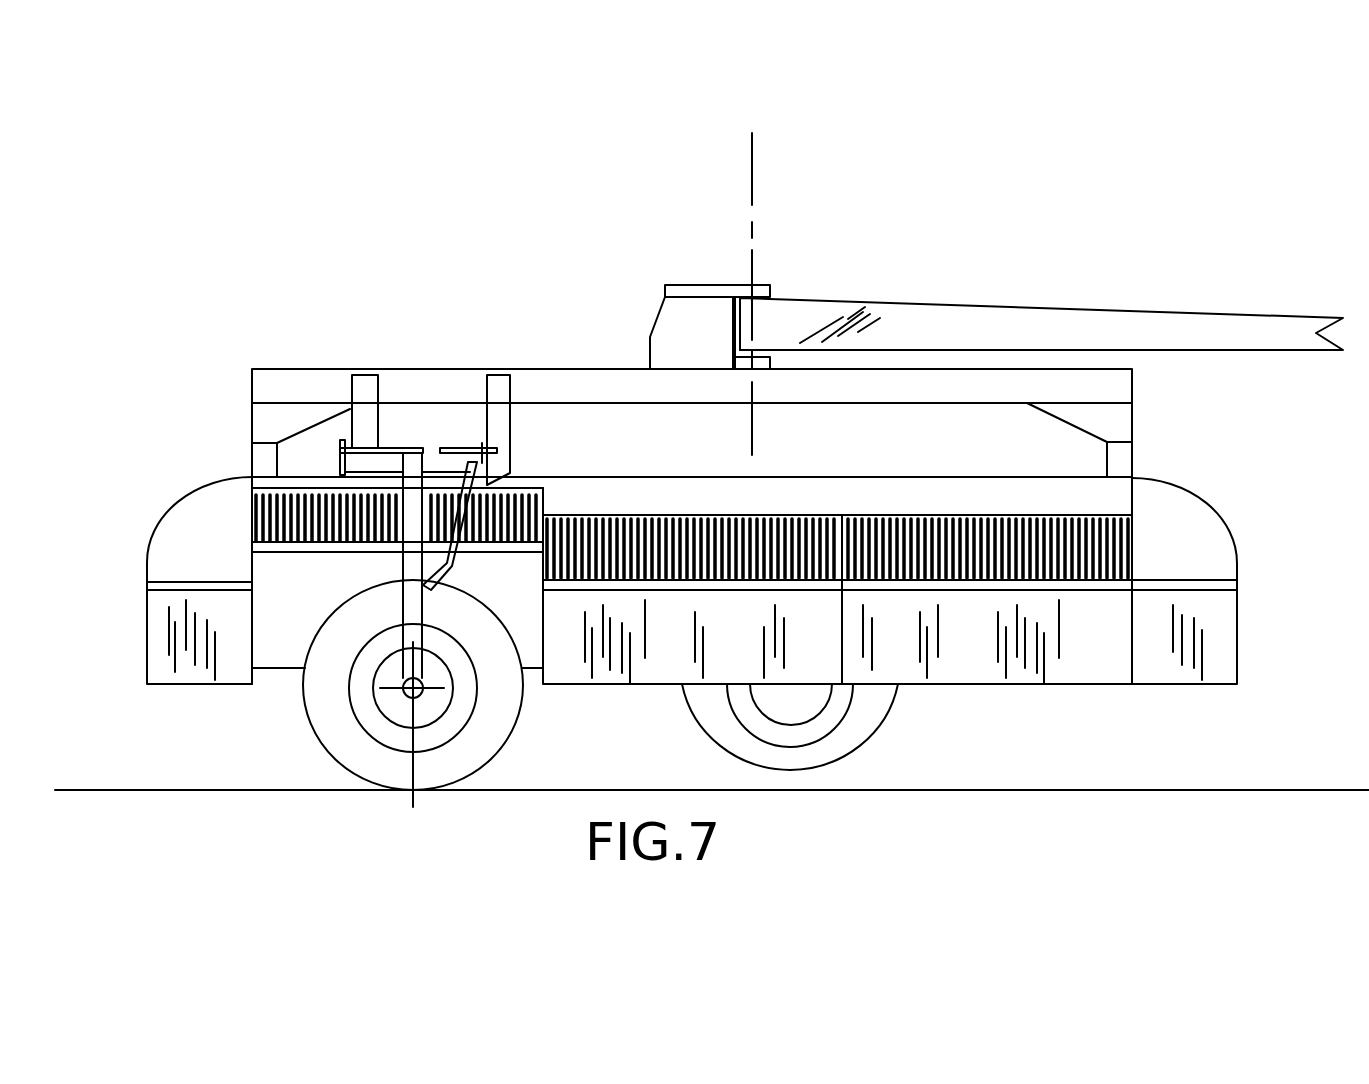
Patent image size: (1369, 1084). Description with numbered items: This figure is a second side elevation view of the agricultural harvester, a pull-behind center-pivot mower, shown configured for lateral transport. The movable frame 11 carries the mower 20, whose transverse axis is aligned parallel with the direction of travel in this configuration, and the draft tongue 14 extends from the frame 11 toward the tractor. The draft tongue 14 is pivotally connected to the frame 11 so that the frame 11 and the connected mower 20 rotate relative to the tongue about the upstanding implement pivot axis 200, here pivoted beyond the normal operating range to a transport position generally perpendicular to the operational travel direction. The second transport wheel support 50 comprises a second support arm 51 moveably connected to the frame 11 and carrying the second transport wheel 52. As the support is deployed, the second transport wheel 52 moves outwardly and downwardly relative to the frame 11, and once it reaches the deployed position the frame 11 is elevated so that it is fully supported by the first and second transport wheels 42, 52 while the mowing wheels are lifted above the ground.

The frame 11 is at (567, 368).
The draft tongue 14 is at (958, 308).
The mower 20 is at (1176, 466).
The implement pivot axis 200 is at (752, 205).
The second transport wheel support 50 is at (302, 430).
The second support arm 51 is at (410, 567).
The second transport wheel 52 is at (490, 733).
The first transport wheel 42 is at (870, 728).